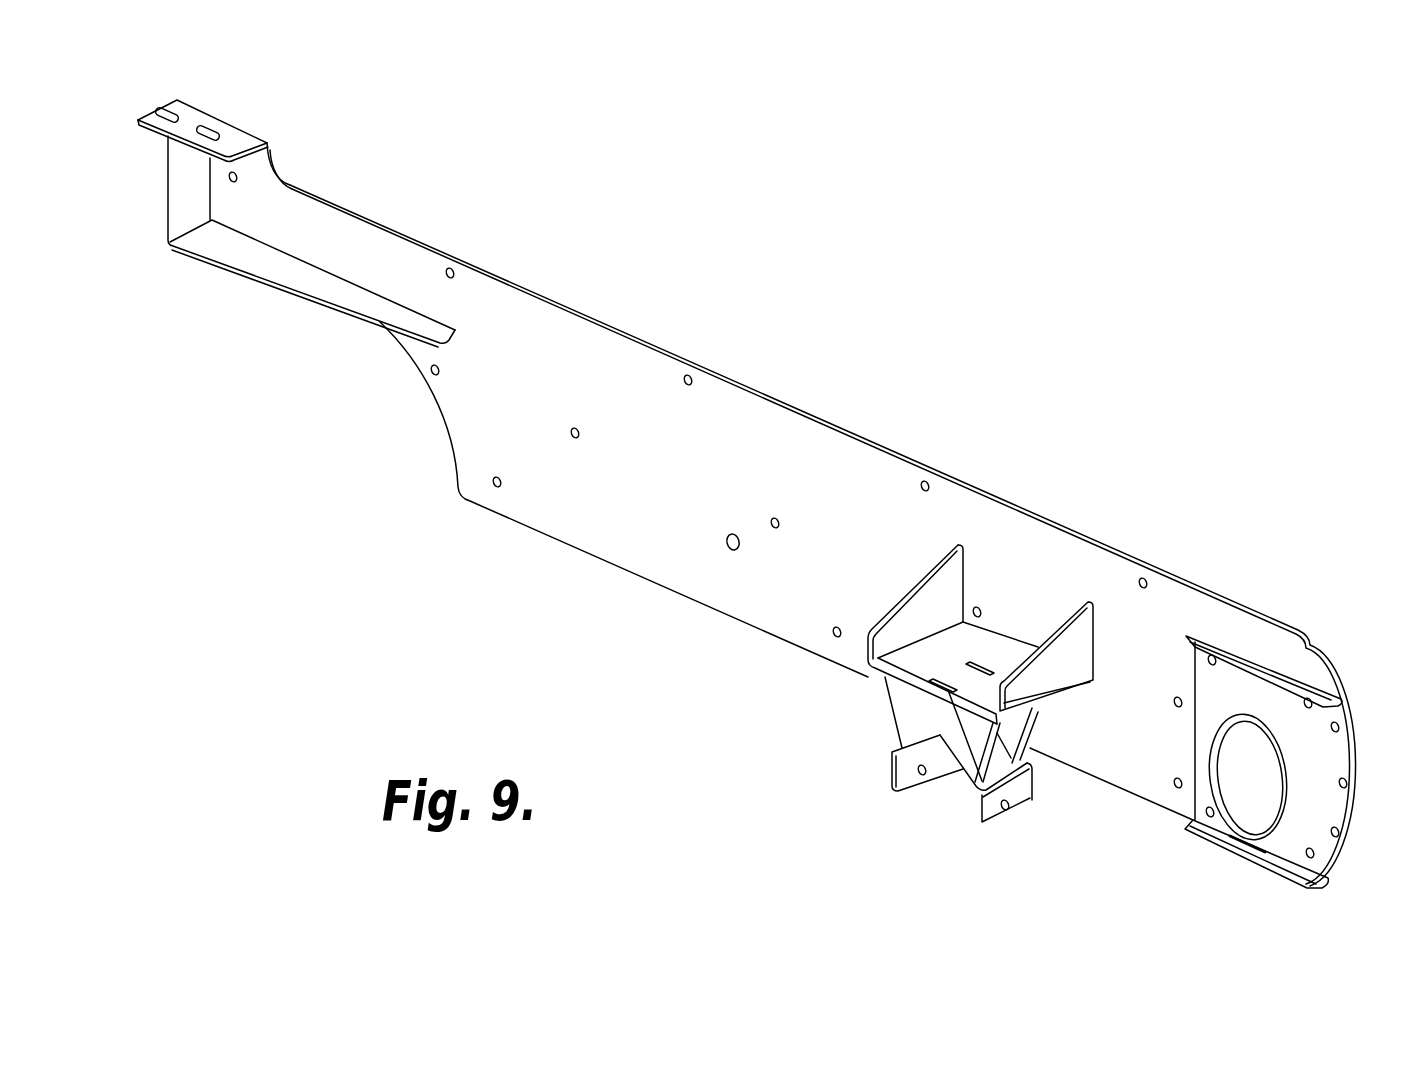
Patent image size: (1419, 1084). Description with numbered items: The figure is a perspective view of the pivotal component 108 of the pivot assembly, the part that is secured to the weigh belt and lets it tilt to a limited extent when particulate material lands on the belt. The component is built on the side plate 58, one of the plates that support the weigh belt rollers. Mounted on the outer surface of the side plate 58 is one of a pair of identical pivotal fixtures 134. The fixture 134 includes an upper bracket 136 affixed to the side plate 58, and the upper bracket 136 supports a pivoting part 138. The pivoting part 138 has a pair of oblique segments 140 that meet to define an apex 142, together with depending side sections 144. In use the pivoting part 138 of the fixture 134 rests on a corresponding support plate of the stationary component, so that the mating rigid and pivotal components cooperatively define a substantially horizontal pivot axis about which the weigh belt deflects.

The pivotal component 108 is at (1118, 440).
The side plate 58 is at (560, 512).
The pivotal fixture 134 is at (775, 691).
The upper bracket 136 is at (1028, 727).
The pivoting part 138 is at (1023, 797).
The oblique segments 140 is at (916, 746).
The apex 142 is at (935, 748).
The depending side sections 144 is at (988, 818).